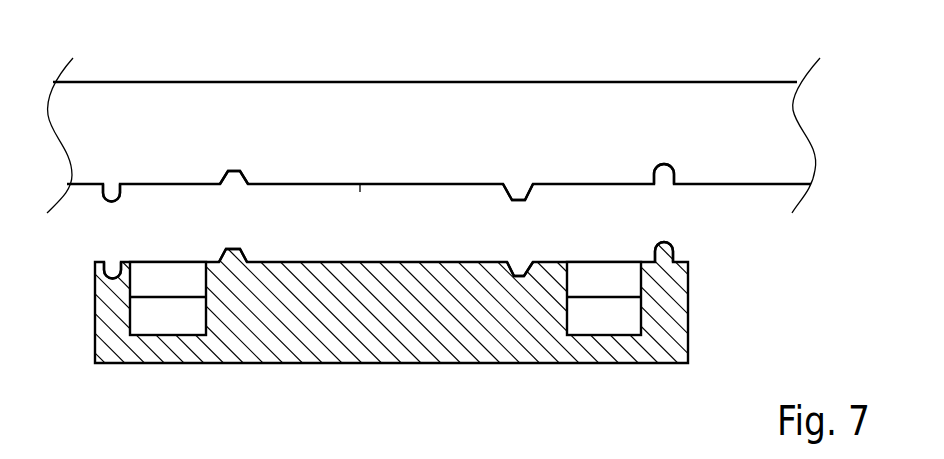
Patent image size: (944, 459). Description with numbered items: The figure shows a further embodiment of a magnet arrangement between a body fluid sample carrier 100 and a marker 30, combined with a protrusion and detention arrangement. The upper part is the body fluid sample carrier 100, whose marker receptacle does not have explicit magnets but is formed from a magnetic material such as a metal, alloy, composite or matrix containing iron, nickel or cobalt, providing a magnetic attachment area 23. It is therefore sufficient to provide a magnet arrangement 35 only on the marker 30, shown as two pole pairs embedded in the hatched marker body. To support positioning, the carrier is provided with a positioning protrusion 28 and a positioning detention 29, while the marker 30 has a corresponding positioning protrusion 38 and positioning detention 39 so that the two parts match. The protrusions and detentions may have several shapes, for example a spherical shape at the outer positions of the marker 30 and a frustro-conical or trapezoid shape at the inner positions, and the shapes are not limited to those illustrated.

The body fluid sample carrier 100 is at (700, 100).
The magnetic attachment area 23 is at (165, 186).
The positioning protrusion on carrier body 28 is at (112, 193).
The positioning detention on carrier body 29 is at (248, 176).
The marker 30 is at (545, 337).
The magnet arrangement on marker 35 is at (209, 297).
The positioning protrusion on marker 38 is at (360, 187).
The positioning detention on marker 39 is at (111, 273).